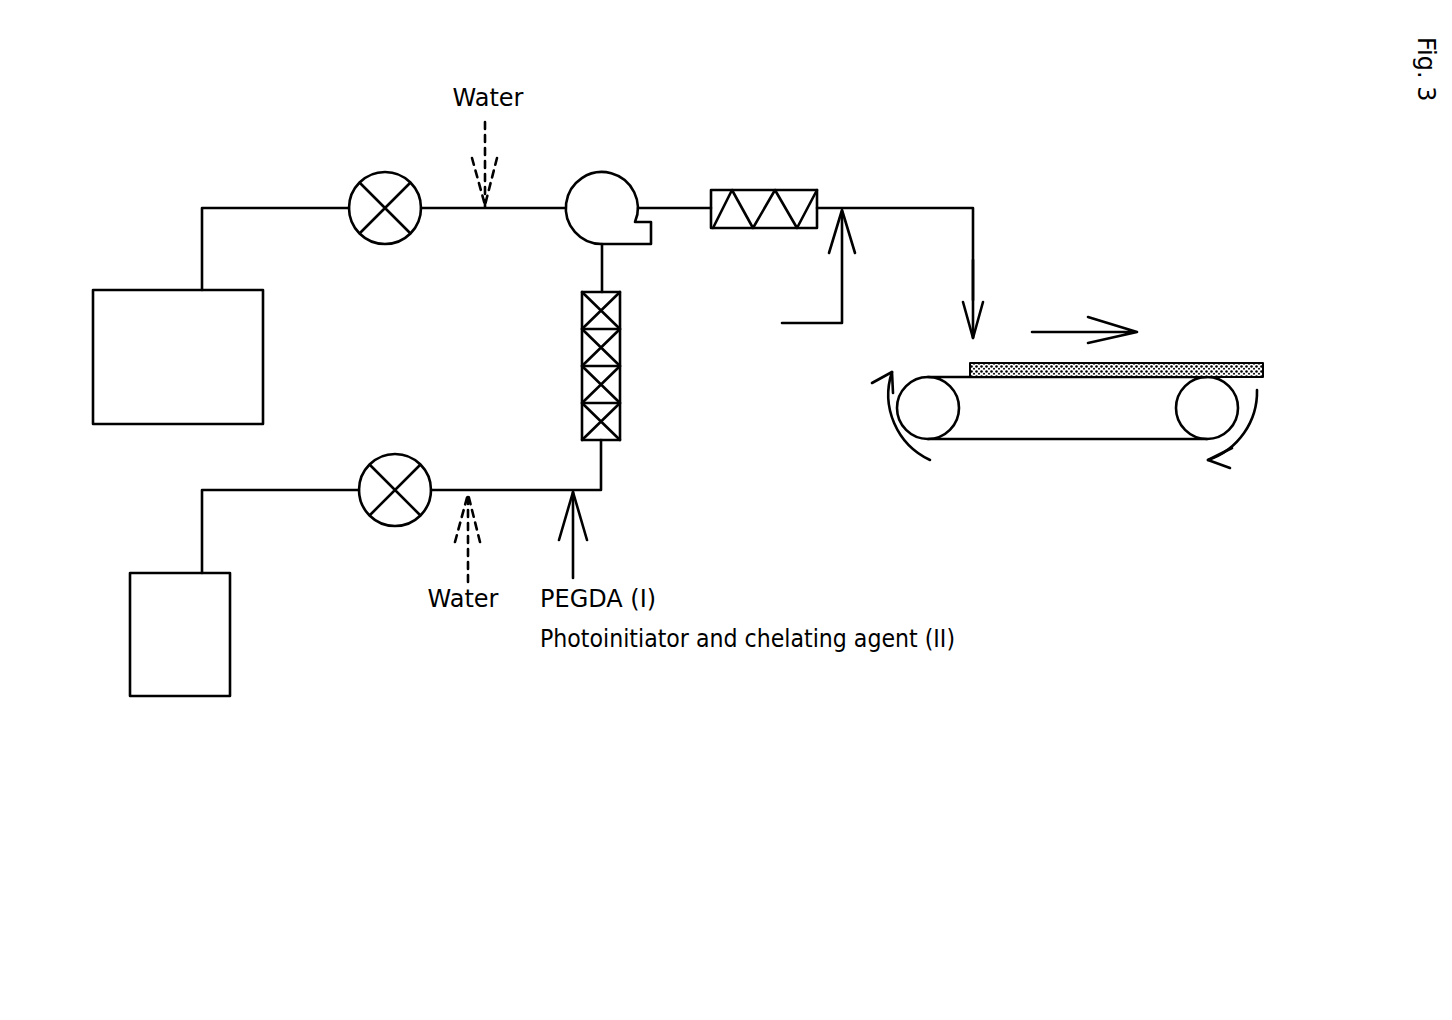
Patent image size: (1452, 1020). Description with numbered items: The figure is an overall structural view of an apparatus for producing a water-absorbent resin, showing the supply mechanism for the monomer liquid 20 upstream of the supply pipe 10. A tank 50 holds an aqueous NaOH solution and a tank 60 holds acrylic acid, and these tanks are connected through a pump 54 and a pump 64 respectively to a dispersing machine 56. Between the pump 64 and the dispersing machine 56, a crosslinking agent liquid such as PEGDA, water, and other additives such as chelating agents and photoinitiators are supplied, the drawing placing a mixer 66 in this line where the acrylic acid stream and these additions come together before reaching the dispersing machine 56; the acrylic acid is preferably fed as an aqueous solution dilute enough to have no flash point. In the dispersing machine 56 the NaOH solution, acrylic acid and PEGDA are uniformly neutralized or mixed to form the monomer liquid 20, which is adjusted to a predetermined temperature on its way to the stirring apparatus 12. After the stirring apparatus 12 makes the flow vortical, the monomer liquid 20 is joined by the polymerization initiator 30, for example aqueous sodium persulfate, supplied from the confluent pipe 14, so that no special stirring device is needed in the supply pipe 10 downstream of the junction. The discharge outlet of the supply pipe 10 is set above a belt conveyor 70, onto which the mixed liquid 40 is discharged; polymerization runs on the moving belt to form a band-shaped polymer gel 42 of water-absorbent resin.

The supply pipe 10 is at (890, 208).
The stirring apparatus 12 is at (773, 190).
The confluent pipe 14 is at (807, 322).
The monomer liquid 20 is at (682, 207).
The polymerization initiator 30 is at (716, 342).
The mixed liquid 40 is at (977, 255).
The band-shaped polymer gel 42 is at (1147, 363).
The tank 50 is at (167, 290).
The pump 54 is at (365, 177).
The dispersing machine 56 is at (594, 185).
The tank 60 is at (165, 580).
The pump 64 is at (372, 480).
The static mixer 66 is at (622, 395).
The belt conveyor 70 is at (962, 440).